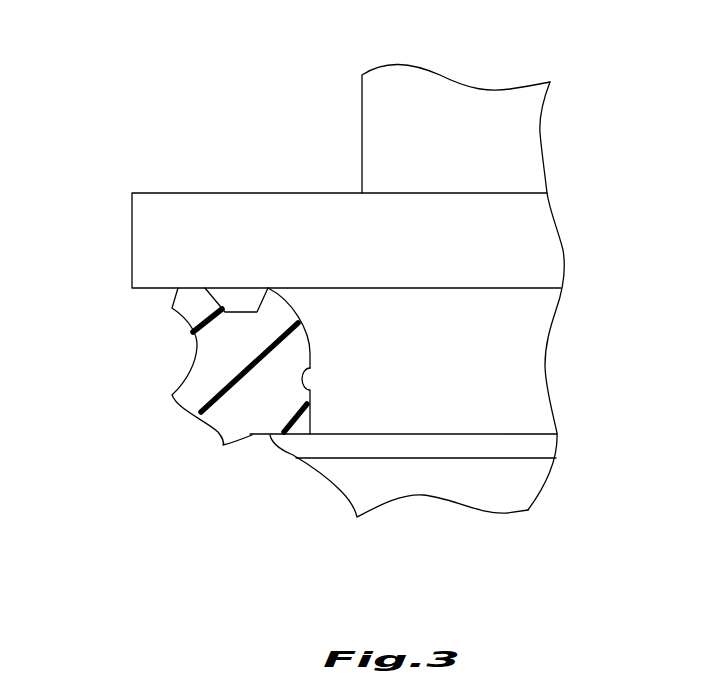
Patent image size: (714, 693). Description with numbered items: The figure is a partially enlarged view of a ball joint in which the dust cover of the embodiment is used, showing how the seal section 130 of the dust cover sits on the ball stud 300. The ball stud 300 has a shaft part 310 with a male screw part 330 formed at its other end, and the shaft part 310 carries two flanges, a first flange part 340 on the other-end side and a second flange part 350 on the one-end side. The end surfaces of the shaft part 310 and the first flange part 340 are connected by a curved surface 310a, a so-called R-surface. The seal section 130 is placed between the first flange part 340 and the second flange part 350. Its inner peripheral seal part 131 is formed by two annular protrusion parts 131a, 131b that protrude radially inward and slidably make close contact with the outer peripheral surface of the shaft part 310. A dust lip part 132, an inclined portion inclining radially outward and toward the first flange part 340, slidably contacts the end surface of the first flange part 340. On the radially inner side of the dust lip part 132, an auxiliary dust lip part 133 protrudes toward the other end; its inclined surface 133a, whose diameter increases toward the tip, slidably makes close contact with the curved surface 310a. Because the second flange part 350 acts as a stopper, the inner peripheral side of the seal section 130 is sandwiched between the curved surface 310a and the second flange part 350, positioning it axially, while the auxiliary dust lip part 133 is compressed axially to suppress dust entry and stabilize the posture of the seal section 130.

The ball stud 300 is at (338, 88).
The male screw part 330 is at (527, 130).
The first flange part 340 is at (542, 232).
The second flange part 350 is at (503, 443).
The shaft part 310 is at (523, 480).
The curved surface 310a is at (293, 340).
The seal section 130 is at (117, 385).
The inner peripheral seal part 131 is at (333, 372).
The annular protrusion part 131a is at (303, 353).
The annular protrusion part 131b is at (308, 400).
The dust lip part 132 is at (201, 297).
The auxiliary dust lip part 133 is at (262, 303).
The inclined surface 133a is at (300, 306).